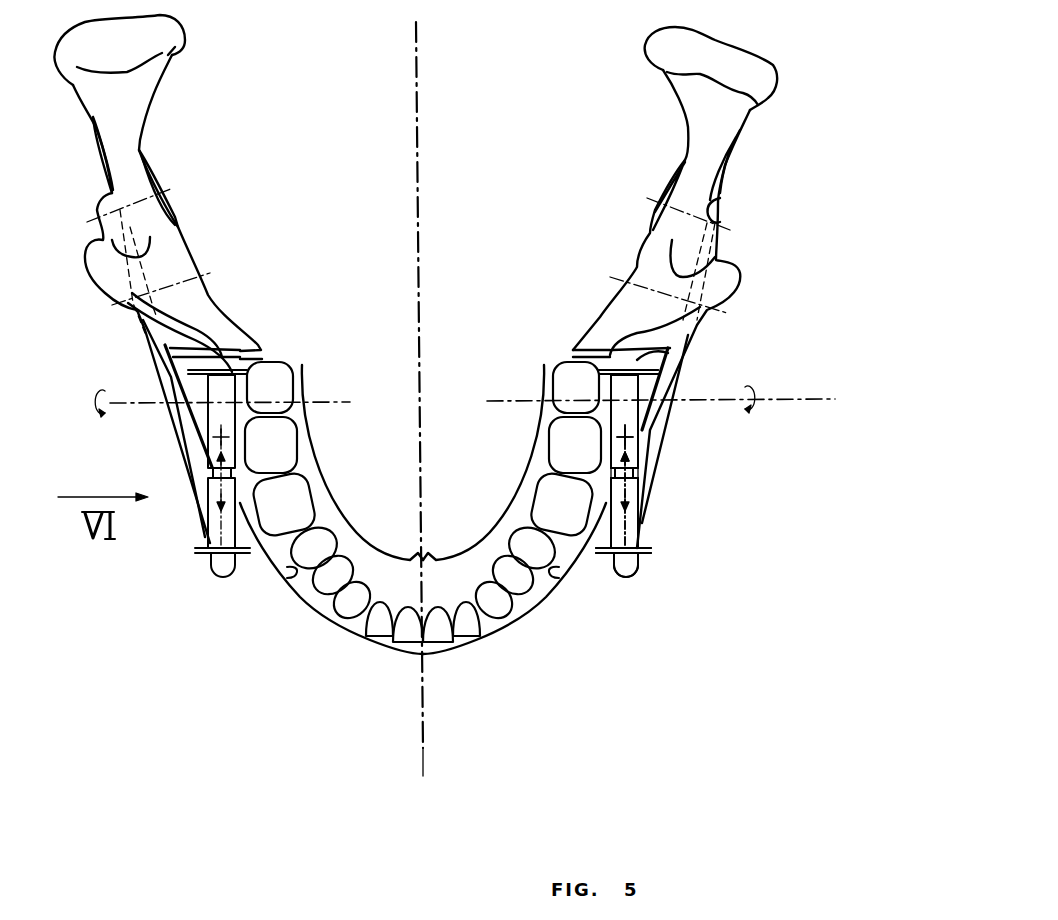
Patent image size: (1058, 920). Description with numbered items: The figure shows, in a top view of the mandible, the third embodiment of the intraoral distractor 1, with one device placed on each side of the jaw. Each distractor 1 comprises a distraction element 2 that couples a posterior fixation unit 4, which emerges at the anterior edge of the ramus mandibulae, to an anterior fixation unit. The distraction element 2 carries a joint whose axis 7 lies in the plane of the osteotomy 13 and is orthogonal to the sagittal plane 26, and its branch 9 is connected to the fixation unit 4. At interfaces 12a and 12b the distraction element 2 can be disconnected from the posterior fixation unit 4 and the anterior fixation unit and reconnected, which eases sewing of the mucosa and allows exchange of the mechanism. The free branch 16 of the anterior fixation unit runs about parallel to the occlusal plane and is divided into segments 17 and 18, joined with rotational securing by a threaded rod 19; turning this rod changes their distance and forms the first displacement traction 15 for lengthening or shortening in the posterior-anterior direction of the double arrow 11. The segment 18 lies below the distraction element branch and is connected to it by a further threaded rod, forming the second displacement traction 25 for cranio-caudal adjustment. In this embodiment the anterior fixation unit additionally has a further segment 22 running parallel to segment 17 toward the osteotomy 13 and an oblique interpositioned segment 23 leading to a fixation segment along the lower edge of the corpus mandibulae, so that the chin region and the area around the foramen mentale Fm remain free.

The distractor 1 is at (189, 539).
The distraction element 2 is at (668, 373).
The fixation unit 4 is at (683, 345).
The axis 7 is at (670, 399).
The branch 9 is at (617, 436).
The double-arrow 11 is at (630, 473).
The interface 12a is at (658, 372).
The interface 12b is at (651, 552).
The osteotomy 13 is at (640, 362).
The first displacement traction 15 is at (832, 472).
The free branch 16 is at (643, 525).
The segment 17 is at (640, 566).
The segment 18 is at (633, 538).
The threaded rod 19 is at (627, 513).
The segment 22 is at (640, 459).
The oblique interpositioned segment 23 is at (655, 415).
The second displacement traction 25 is at (628, 446).
The sagittal plane 26 is at (423, 766).
The foramen mentale Fm is at (557, 577).